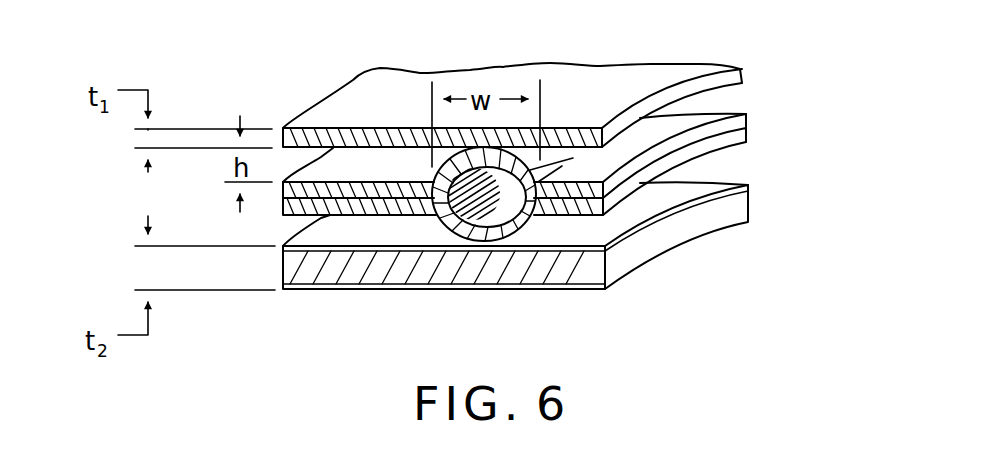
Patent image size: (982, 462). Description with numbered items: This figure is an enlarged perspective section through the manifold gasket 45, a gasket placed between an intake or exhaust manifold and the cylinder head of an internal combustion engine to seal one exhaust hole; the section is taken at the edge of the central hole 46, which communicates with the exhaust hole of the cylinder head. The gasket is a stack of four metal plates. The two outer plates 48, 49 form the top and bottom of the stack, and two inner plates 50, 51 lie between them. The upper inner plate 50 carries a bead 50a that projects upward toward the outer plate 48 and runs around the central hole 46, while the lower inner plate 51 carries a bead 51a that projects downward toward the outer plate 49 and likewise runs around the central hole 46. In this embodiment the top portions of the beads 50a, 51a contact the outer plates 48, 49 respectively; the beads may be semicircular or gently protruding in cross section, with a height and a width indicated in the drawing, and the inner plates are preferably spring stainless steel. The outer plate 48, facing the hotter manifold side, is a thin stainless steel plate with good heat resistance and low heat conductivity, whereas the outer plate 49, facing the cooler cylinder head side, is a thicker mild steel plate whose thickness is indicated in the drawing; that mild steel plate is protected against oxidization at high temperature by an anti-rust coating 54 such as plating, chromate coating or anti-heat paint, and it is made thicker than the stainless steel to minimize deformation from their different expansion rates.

The manifold gasket 45 is at (766, 76).
The central hole 46 is at (717, 295).
The outer plate 48 is at (417, 134).
The outer plate 49 is at (447, 273).
The inner plate 50 is at (398, 192).
The bead 50a is at (538, 165).
The inner plate 51 is at (316, 212).
The bead 51a is at (502, 237).
The coating 54 is at (378, 247).